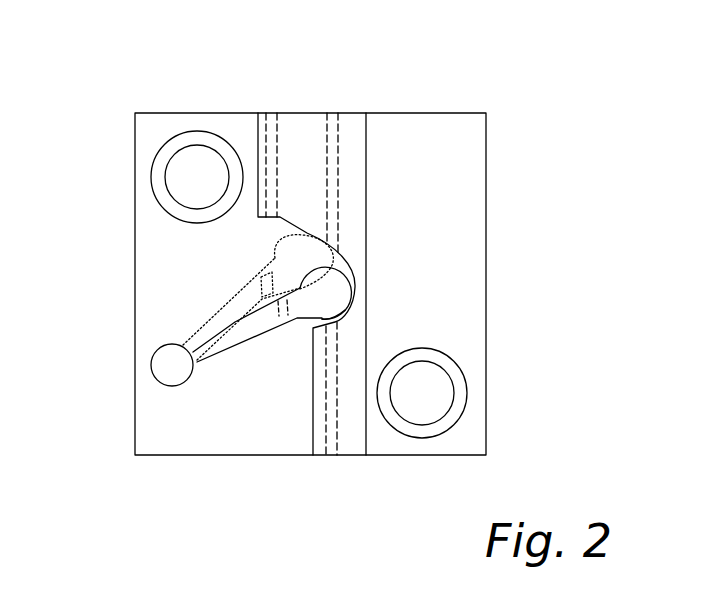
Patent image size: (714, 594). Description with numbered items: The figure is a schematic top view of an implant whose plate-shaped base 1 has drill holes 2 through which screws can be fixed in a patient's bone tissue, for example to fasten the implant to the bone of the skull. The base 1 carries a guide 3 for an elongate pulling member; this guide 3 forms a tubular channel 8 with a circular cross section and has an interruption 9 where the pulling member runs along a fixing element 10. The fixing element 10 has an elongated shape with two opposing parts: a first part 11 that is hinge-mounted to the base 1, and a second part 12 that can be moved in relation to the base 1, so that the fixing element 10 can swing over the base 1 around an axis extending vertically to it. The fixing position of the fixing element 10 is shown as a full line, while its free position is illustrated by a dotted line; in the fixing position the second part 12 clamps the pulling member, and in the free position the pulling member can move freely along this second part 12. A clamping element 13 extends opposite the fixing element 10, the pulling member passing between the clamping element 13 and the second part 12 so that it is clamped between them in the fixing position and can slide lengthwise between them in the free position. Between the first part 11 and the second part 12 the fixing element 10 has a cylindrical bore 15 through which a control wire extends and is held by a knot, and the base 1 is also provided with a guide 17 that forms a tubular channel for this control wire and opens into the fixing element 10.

The base 1 is at (447, 157).
The drill holes 2 is at (178, 190).
The guide 3 is at (335, 140).
The tubular channel 8 is at (337, 420).
The interruption 9 is at (347, 270).
The fixing element 10 is at (240, 335).
The first part 11 is at (172, 372).
The second part 12 is at (322, 303).
The clamping element 13 is at (352, 303).
The cylindrical bore 15 is at (278, 302).
The guide 17 is at (266, 132).